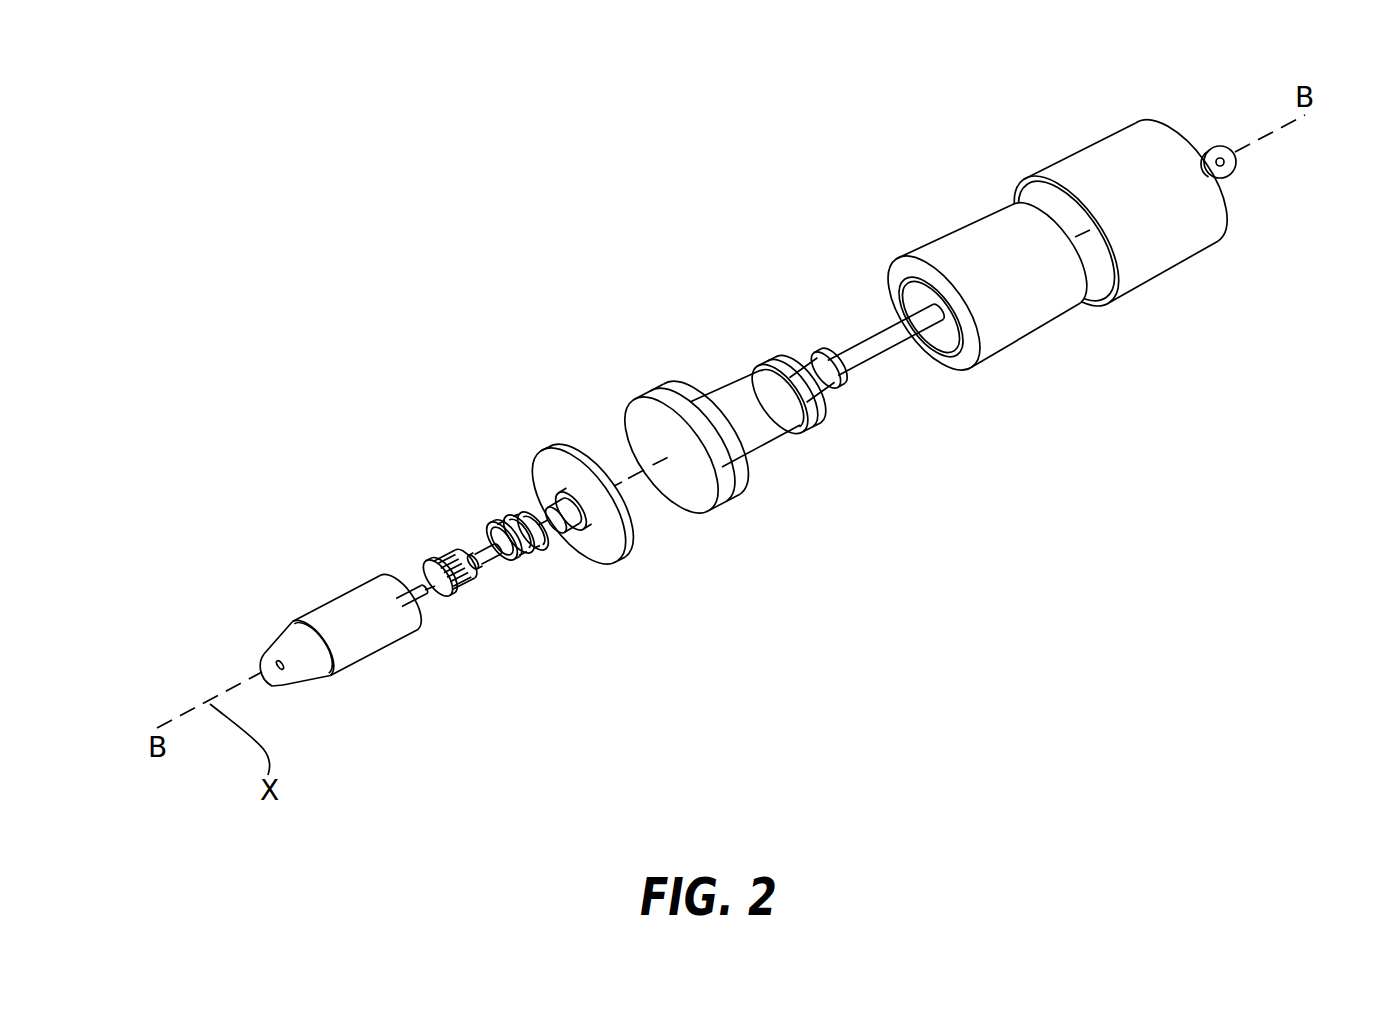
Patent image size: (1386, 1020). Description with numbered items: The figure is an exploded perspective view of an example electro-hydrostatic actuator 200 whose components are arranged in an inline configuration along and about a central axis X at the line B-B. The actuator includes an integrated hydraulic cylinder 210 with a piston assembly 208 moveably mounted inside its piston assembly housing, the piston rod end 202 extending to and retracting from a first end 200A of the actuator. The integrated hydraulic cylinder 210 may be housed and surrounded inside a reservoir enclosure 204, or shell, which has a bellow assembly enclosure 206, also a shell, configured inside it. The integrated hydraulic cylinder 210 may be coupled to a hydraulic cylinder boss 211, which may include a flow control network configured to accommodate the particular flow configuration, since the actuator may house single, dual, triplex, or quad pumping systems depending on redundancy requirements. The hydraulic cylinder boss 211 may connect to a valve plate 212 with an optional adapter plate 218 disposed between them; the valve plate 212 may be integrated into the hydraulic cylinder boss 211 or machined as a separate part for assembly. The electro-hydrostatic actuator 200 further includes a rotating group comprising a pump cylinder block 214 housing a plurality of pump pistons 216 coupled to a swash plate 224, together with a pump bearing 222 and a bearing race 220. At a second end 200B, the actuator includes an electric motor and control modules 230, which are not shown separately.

The electro-hydrostatic actuator 200 is at (352, 176).
The first end 200A is at (1121, 200).
The second end 200B is at (284, 693).
The piston rod end 202 is at (1207, 140).
The reservoir enclosure 204 is at (1187, 233).
The bellow assembly enclosure 206 is at (1040, 303).
The piston assembly 208 is at (882, 365).
The integrated hydraulic cylinder 210 is at (767, 428).
The hydraulic cylinder boss 211 is at (667, 377).
The valve plate 212 is at (562, 530).
The pump cylinder block 214 is at (587, 512).
The pump pistons 216 is at (476, 584).
The adapter plate 218 is at (547, 440).
The bearing race 220 is at (515, 517).
The pump bearing 222 is at (497, 520).
The swash plate 224 is at (421, 563).
The electric motor and control modules 230 is at (363, 643).